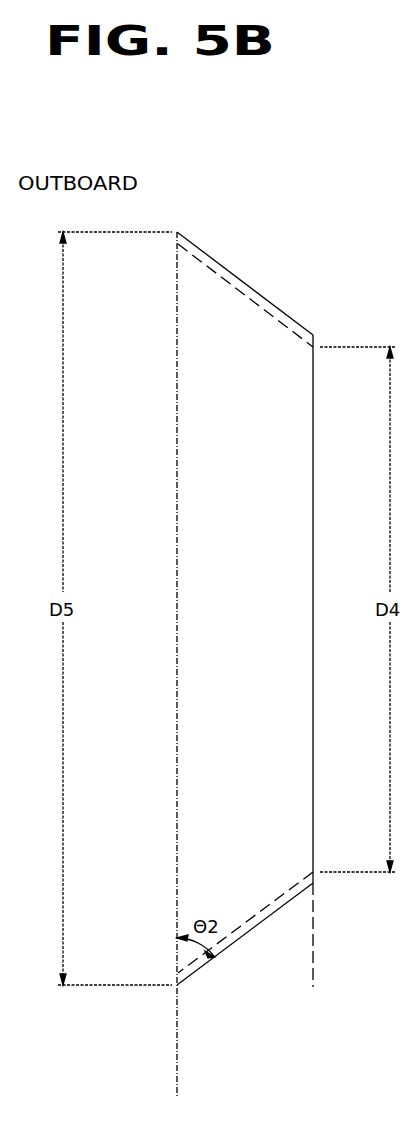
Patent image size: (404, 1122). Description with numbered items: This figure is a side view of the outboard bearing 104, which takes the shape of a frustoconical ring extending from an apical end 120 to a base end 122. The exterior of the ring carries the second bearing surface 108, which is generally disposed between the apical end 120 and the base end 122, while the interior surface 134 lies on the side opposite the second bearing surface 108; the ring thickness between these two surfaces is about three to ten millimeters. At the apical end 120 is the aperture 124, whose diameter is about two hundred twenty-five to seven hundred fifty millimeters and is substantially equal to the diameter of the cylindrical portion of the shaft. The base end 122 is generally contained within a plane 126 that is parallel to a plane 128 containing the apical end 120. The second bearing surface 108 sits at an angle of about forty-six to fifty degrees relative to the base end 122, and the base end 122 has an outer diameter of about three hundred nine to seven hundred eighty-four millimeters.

The outboard bearing 104 is at (190, 242).
The second bearing surface 108 is at (245, 283).
The apical end 120 is at (315, 334).
The base end 122 is at (178, 229).
The aperture 124 is at (313, 472).
The plane 126 is at (178, 1055).
The plane 128 is at (313, 940).
The interior surface 134 is at (237, 290).